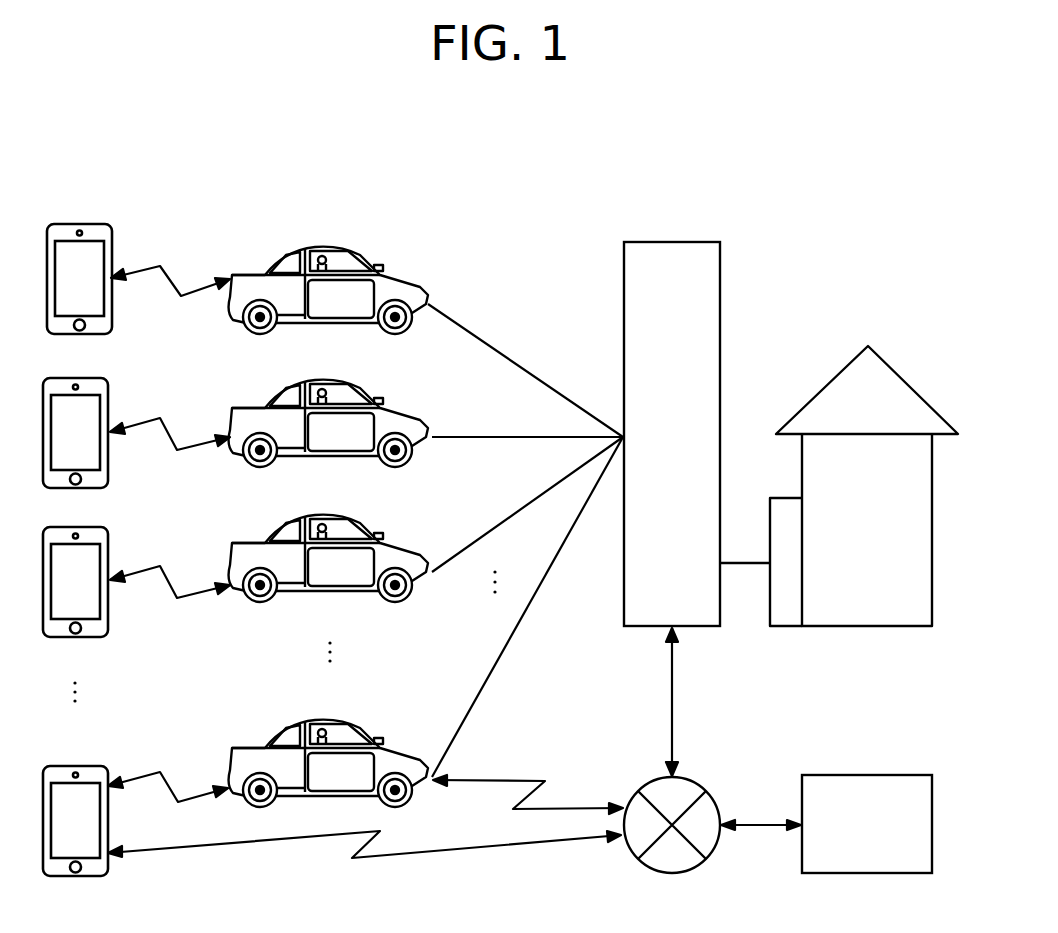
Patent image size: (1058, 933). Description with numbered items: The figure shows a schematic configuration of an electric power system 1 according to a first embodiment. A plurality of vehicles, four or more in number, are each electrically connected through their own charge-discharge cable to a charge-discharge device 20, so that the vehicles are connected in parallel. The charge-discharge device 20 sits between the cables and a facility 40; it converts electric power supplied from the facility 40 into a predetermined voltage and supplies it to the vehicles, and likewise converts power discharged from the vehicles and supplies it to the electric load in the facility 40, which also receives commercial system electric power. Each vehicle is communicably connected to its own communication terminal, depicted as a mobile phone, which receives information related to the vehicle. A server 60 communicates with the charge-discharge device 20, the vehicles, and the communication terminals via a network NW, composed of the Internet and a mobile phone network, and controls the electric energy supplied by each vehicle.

The electric power system 1 is at (850, 171).
The charge-discharge device 20 is at (688, 243).
The facility 40 is at (911, 386).
The server 60 is at (880, 775).
The network NW is at (675, 874).